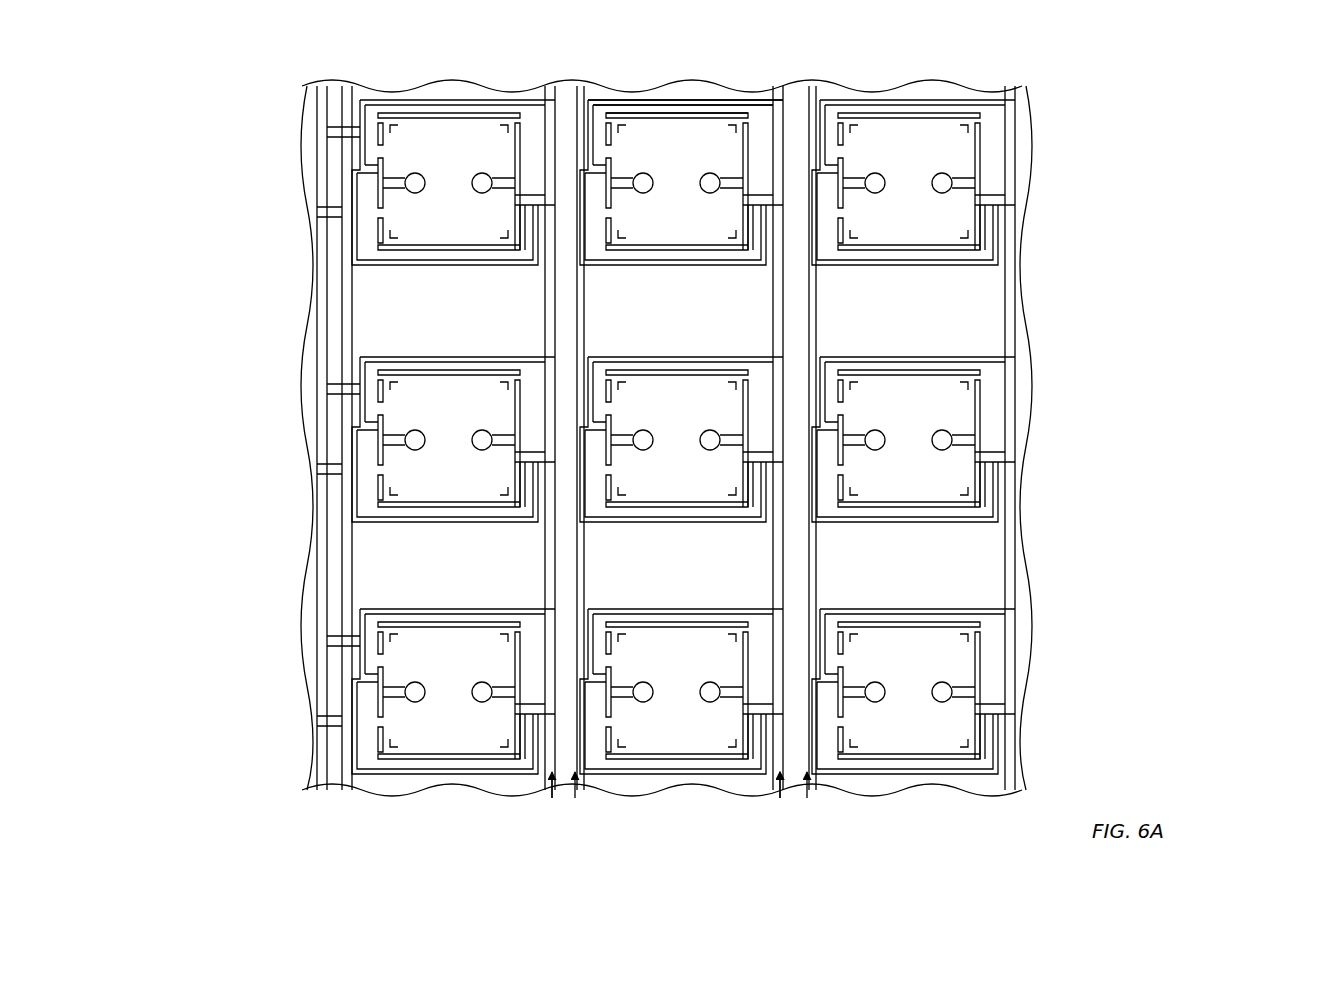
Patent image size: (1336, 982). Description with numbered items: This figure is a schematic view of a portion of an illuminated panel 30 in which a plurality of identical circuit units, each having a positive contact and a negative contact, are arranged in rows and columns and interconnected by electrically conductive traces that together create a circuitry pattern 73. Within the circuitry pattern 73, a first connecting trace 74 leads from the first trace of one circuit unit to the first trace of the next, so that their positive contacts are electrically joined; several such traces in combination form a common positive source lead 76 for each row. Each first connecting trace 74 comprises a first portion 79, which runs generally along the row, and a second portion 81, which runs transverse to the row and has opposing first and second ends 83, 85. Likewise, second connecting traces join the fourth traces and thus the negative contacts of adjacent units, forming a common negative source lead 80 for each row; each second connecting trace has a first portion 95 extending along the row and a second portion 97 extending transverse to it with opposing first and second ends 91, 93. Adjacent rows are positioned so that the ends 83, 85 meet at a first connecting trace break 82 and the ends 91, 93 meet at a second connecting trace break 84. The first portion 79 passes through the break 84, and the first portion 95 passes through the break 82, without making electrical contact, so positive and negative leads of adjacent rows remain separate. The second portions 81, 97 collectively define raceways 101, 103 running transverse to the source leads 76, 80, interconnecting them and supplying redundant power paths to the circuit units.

The illuminated panel 30 is at (205, 150).
The circuitry pattern 73 is at (902, 88).
The first connecting trace 74 is at (623, 258).
The common positive source lead 76 is at (715, 265).
The first portion 79 is at (560, 140).
The common negative source lead 80 is at (843, 97).
The second portion 81 is at (348, 345).
The first connecting trace break 82 is at (597, 120).
The first end 83 is at (565, 398).
The second connecting trace break 84 is at (338, 128).
The second end 85 is at (578, 120).
The first end 91 is at (542, 230).
The second end 93 is at (548, 165).
The first portion 95 is at (640, 115).
The second portion 97 is at (558, 125).
The raceway 101 is at (575, 800).
The raceway 103 is at (552, 800).